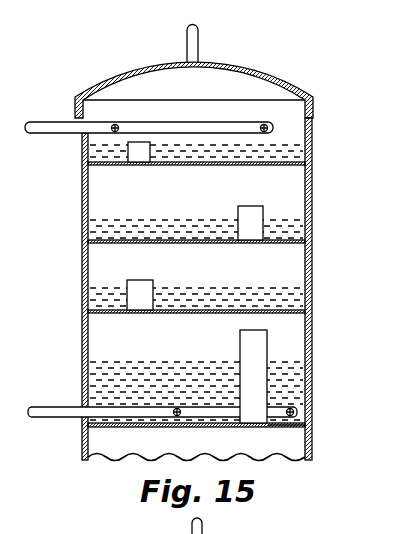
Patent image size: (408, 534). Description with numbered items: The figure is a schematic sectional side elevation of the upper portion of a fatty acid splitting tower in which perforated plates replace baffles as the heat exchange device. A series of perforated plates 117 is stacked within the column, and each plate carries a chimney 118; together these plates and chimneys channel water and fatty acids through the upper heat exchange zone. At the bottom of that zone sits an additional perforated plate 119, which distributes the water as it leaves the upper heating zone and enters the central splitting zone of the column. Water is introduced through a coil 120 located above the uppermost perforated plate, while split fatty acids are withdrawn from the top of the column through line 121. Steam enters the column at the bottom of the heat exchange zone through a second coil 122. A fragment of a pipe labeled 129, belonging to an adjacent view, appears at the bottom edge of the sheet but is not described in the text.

The perforated plate 117 is at (290, 243).
The chimney 118 is at (147, 160).
The additional perforated plate 119 is at (295, 426).
The coil 120 is at (184, 121).
The line 121 is at (197, 48).
The coil 122 is at (223, 410).
The pipe 129 is at (205, 532).